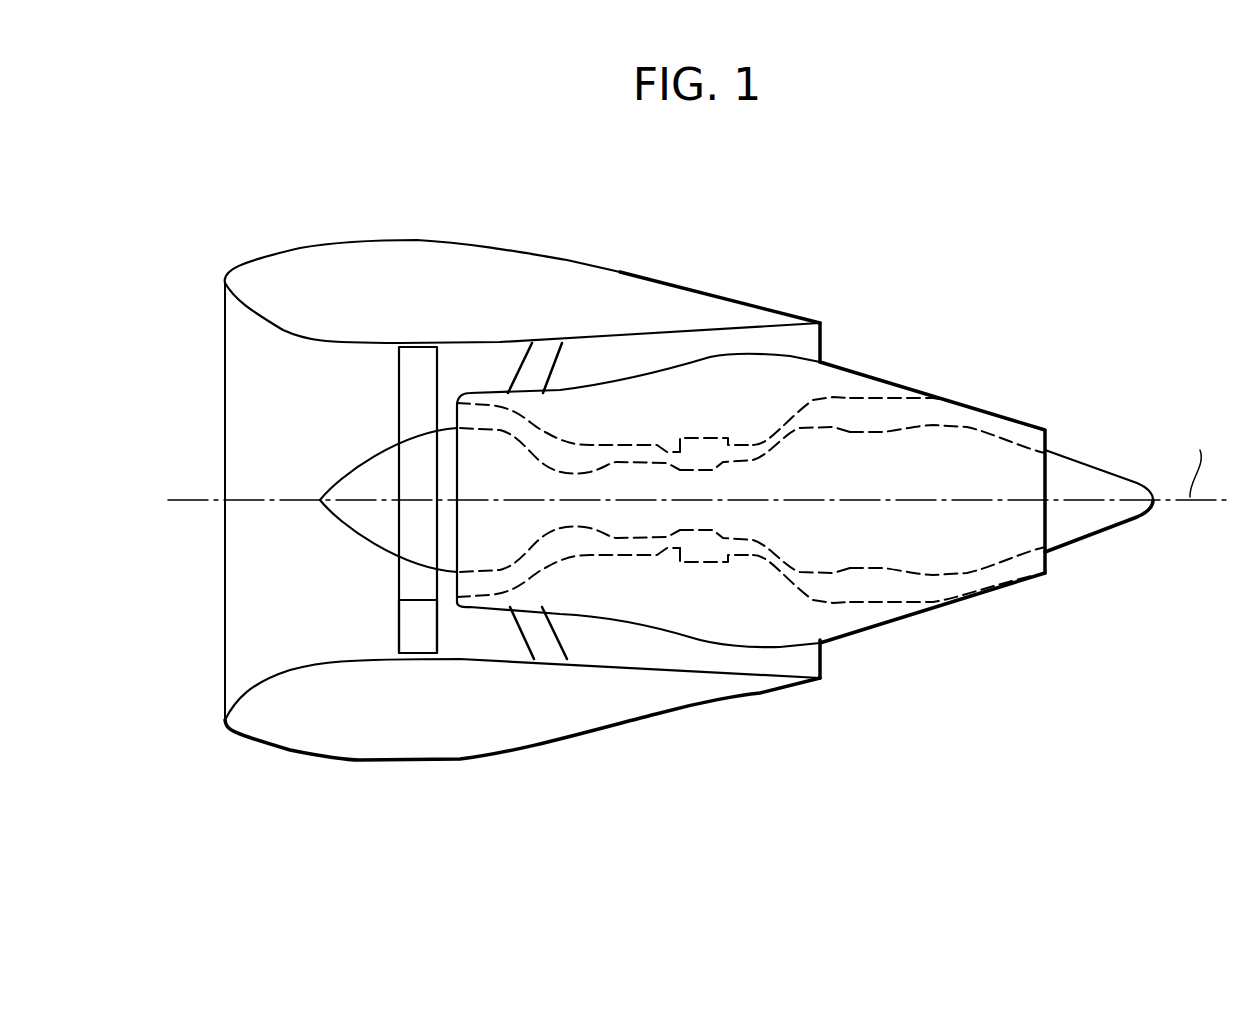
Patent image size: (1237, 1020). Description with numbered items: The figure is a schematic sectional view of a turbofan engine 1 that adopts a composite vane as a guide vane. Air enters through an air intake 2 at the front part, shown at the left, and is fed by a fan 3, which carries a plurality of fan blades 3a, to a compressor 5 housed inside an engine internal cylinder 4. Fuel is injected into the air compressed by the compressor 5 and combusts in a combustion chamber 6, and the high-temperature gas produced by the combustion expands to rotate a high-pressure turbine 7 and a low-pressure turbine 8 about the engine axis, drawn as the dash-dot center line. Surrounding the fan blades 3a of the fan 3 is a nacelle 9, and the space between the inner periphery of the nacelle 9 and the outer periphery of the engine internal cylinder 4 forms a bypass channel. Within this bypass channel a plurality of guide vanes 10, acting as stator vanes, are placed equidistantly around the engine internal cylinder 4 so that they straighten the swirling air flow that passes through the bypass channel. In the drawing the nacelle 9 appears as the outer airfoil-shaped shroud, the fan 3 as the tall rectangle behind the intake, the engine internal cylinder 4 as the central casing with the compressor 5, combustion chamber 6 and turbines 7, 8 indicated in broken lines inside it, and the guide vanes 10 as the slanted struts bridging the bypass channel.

The turbofan engine 1 is at (880, 291).
The air intake 2 is at (273, 570).
The fan 3 is at (383, 568).
The fan blade 3a is at (420, 635).
The engine internal cylinder 4 is at (725, 357).
The compressor 5 is at (570, 542).
The combustion chamber 6 is at (715, 553).
The high-pressure turbine 7 is at (773, 560).
The low-pressure turbine 8 is at (887, 585).
The nacelle 9 is at (418, 240).
The guide vane 10 is at (547, 357).